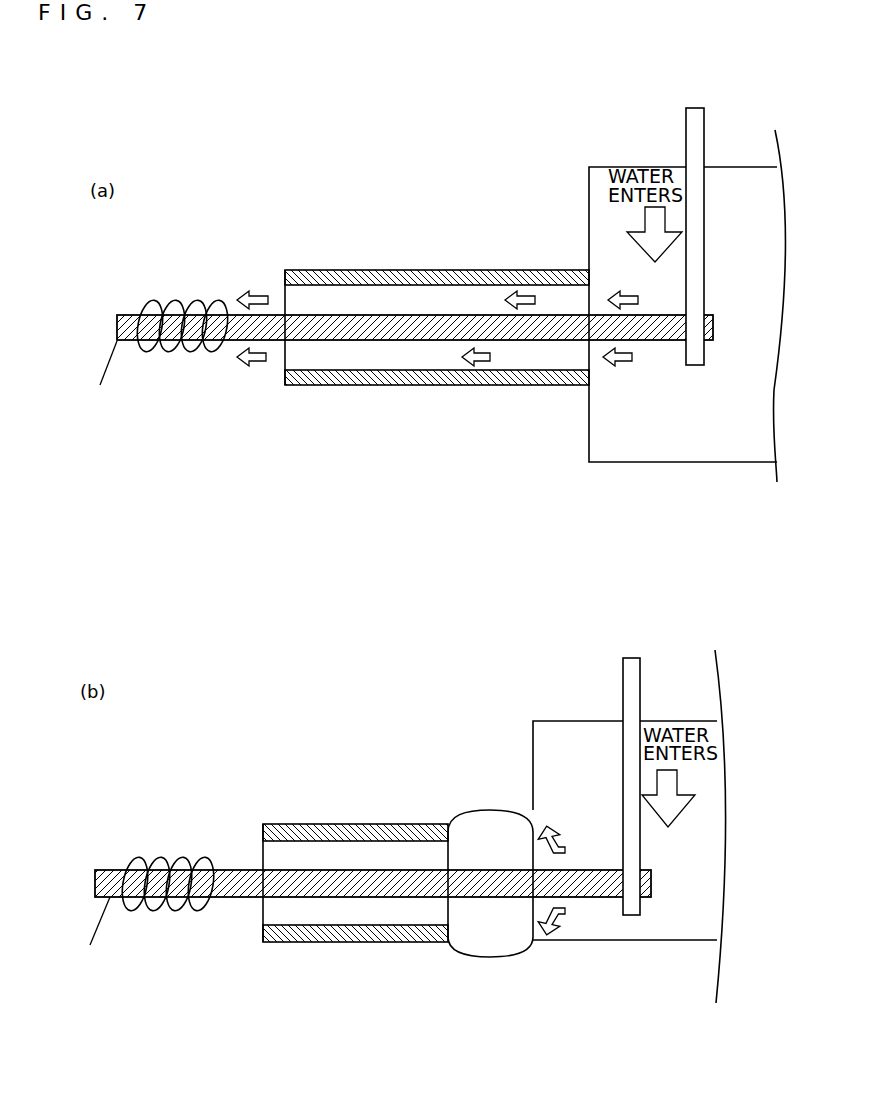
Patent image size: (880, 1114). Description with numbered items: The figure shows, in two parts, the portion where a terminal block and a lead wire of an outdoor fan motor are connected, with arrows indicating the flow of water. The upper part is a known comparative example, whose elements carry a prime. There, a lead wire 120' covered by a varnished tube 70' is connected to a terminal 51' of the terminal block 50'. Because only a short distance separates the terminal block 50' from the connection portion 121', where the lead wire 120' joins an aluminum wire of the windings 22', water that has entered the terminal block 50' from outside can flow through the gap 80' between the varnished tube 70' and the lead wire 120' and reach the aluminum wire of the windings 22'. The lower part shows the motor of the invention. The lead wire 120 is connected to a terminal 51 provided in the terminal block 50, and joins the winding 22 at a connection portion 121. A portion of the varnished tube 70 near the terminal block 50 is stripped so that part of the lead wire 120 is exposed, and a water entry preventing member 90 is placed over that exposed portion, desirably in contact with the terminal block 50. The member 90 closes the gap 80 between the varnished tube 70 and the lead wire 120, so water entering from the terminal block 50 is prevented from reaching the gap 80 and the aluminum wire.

The winding 22 is at (142, 929).
The winding 22' is at (153, 371).
The terminal block 50 is at (629, 836).
The terminal block 50' is at (687, 330).
The terminal 51 is at (622, 866).
The terminal 51' is at (688, 315).
The varnished tube 70 is at (355, 796).
The varnished tube 70' is at (437, 252).
The gap 80 is at (355, 954).
The gap 80' is at (437, 403).
The water entry preventing member 90 is at (490, 822).
The lead wire 120 is at (373, 834).
The lead wire 120' is at (415, 279).
The connection portion 121 is at (175, 849).
The connection portion 121' is at (190, 292).